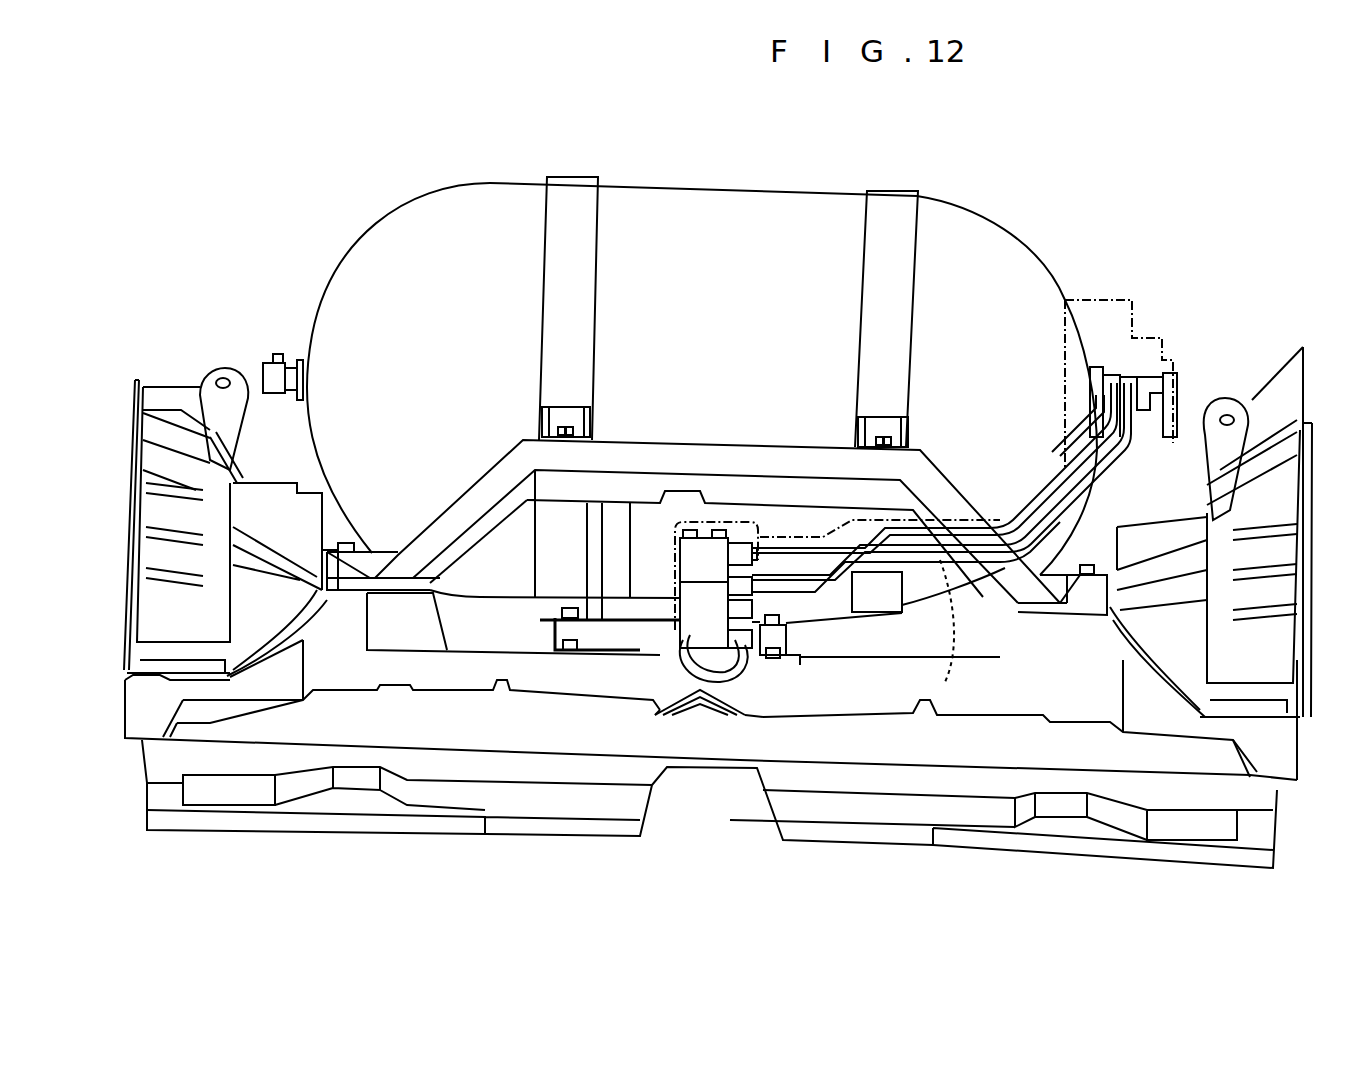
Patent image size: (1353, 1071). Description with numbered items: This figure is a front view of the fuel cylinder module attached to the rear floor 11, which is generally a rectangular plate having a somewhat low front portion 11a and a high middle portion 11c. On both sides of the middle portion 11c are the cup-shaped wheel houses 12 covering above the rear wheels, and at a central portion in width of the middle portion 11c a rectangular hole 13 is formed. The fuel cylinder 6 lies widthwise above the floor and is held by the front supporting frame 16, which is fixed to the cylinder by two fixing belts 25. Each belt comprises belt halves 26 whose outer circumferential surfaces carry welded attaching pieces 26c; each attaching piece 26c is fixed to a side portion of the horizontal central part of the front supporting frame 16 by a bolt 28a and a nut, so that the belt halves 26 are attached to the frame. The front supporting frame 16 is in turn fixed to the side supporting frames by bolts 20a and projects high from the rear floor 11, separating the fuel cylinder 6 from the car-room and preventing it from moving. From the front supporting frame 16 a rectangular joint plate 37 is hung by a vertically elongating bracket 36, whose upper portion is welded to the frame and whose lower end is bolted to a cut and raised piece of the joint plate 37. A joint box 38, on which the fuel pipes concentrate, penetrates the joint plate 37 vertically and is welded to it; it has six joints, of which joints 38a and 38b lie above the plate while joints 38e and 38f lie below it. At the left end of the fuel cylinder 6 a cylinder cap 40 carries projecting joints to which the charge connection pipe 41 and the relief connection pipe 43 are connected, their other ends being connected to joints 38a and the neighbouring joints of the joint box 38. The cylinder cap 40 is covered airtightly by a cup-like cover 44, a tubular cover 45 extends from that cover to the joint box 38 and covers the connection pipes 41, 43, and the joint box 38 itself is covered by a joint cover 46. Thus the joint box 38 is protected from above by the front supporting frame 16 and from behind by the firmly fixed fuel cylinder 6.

The fuel cylinder 6 is at (722, 188).
The fixing belt 25 is at (747, 274).
The belt half 26 is at (570, 190).
The attaching piece 26c is at (545, 425).
The bolt 28a is at (562, 428).
The front supporting frame 16 is at (683, 445).
The bolt 20a is at (345, 545).
The wheel house 12 is at (232, 452).
The middle portion 11c is at (508, 596).
The bracket 36 is at (610, 500).
The joint plate 37 is at (655, 618).
The joint box 38 is at (708, 545).
The joint 38a is at (752, 625).
The joint 38b is at (742, 548).
The joint 38e is at (740, 665).
The joint 38f is at (665, 650).
The rectangular hole 13 is at (672, 648).
The joint cover 46 is at (805, 530).
The cup-like cover 44 is at (1140, 318).
The charge connection pipe 41 is at (1048, 520).
The relief connection pipe 43 is at (1040, 520).
The cylinder cap 40 is at (1150, 375).
The tubular cover 45 is at (948, 684).
The rear floor 11 is at (719, 800).
The front portion 11a is at (560, 775).